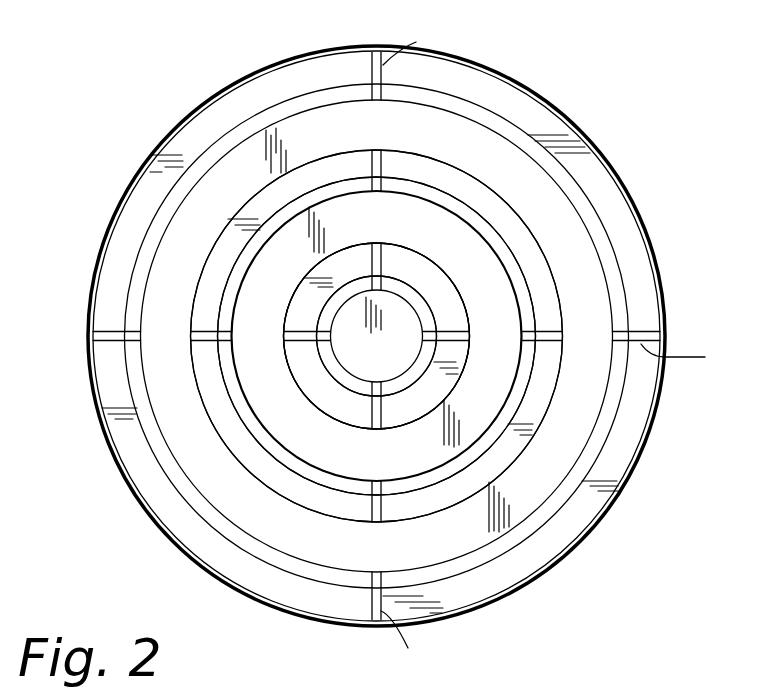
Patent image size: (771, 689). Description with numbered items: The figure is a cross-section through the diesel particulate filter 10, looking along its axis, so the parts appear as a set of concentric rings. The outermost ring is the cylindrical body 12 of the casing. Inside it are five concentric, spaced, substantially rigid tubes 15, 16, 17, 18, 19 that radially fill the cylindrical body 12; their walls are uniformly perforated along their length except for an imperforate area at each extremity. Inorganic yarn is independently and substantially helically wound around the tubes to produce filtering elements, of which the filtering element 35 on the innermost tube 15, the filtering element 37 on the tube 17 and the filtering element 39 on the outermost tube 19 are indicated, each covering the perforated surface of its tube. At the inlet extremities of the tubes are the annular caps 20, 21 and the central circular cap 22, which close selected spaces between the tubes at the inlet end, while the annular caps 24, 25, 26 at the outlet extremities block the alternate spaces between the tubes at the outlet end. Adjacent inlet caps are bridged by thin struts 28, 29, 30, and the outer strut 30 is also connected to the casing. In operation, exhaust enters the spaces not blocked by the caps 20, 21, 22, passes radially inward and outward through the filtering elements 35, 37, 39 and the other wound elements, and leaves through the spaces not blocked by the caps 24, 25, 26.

The diesel particulate filter 10 is at (670, 106).
The cylindrical body 12 is at (637, 220).
The tube 15 is at (335, 383).
The tube 16 is at (292, 297).
The tube 17 is at (500, 275).
The tube 18 is at (466, 502).
The tube 19 is at (600, 412).
The annular cap 20 is at (288, 243).
The annular cap 21 is at (567, 435).
The central circular cap 22 is at (389, 369).
The annular cap 24 is at (297, 353).
The annular cap 25 is at (480, 480).
The annular cap 26 is at (633, 270).
The strut 28 is at (387, 250).
The strut 29 is at (383, 158).
The strut 30 is at (561, 346).
The filtering element 35 is at (327, 368).
The filtering element 37 is at (485, 233).
The filtering element 39 is at (615, 320).